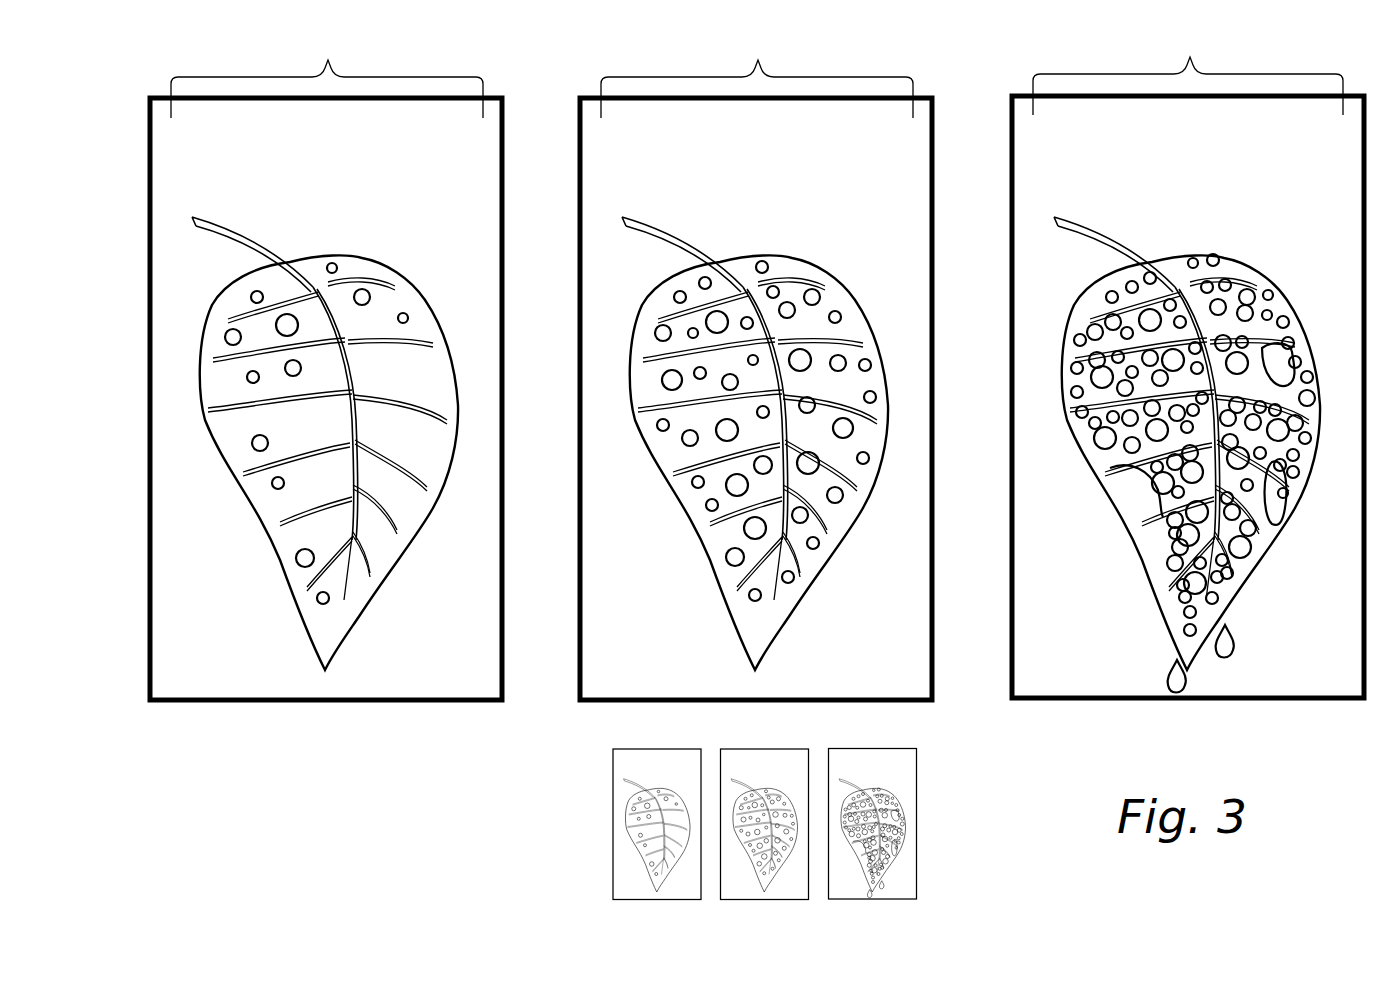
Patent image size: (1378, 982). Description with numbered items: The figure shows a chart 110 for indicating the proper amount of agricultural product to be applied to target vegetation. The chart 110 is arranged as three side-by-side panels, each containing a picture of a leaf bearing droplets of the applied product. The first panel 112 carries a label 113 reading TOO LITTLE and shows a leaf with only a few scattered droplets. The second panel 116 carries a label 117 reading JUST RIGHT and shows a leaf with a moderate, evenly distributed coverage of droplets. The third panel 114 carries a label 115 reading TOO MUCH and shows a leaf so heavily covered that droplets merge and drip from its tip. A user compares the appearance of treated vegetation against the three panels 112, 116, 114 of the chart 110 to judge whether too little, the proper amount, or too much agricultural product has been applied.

The chart 110 is at (757, 419).
The first panel 112 is at (263, 673).
The first panel label 113 is at (327, 75).
The third panel 114 is at (1127, 668).
The third panel label 115 is at (1188, 72).
The second panel 116 is at (617, 673).
The second panel label 117 is at (757, 75).